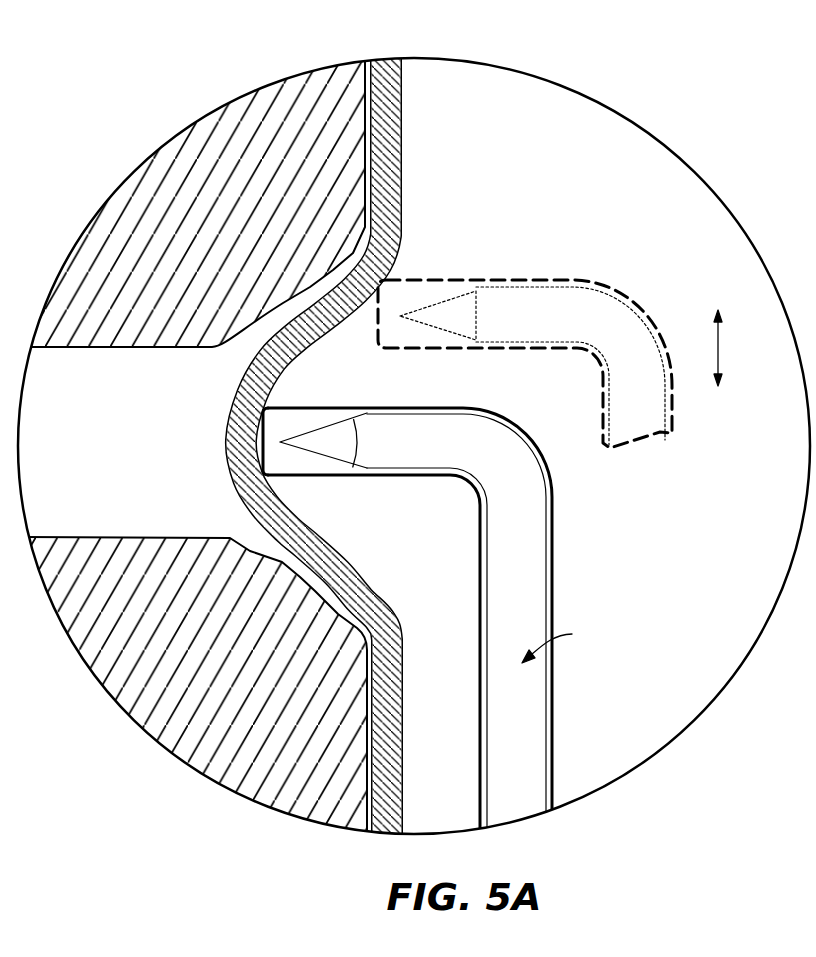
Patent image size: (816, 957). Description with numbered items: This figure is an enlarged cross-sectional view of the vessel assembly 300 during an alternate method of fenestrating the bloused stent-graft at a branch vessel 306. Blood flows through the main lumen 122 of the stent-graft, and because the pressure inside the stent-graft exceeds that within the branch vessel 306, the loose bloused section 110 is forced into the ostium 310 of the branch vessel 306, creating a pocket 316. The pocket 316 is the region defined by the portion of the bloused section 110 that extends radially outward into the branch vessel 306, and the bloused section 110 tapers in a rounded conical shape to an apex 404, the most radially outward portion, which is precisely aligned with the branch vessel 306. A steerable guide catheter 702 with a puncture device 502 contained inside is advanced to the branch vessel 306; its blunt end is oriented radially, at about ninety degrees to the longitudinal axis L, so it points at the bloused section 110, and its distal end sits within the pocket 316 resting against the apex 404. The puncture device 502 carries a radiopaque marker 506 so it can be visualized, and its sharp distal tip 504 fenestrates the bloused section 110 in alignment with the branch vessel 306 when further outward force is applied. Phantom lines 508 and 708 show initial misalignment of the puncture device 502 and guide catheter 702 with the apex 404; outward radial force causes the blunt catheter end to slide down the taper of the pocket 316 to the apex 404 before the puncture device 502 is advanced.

The bloused section 110 is at (403, 102).
The main lumen 122 is at (596, 169).
The vessel assembly 300 is at (185, 848).
The branch vessel 306 is at (90, 481).
The ostium 310 is at (279, 302).
The pocket 316 is at (318, 389).
The apex 404 is at (225, 445).
The puncture device 502 is at (566, 642).
The distal tip 504 is at (282, 447).
The radiopaque marker 506 is at (370, 450).
The phantom lines 508 is at (477, 317).
The steerable guide catheter 702 is at (553, 545).
The phantom lines 708 is at (647, 312).
The longitudinal axis L is at (718, 340).